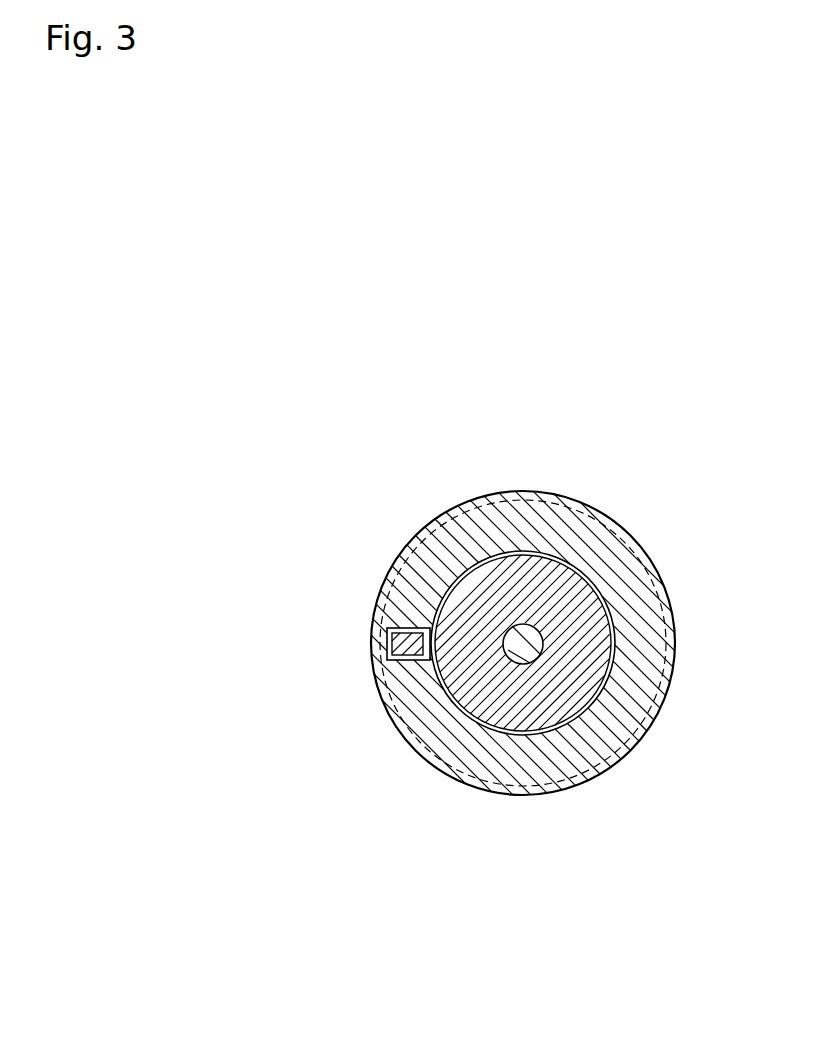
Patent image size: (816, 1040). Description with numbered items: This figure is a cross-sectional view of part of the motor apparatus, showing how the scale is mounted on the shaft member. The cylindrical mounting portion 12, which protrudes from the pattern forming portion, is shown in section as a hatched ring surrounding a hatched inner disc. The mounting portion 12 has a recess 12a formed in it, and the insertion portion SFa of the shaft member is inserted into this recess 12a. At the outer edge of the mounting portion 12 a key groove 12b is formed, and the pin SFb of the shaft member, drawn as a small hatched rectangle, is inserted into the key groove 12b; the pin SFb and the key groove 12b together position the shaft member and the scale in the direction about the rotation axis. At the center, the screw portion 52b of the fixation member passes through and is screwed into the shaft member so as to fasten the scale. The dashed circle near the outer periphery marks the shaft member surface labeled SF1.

The mounting portion 12 is at (640, 544).
The recess 12a is at (558, 562).
The key groove 12b is at (428, 662).
The screw portion 52b is at (528, 647).
The insertion portion SFa is at (440, 593).
The pin SFb is at (386, 628).
The first surface SF1 is at (541, 803).